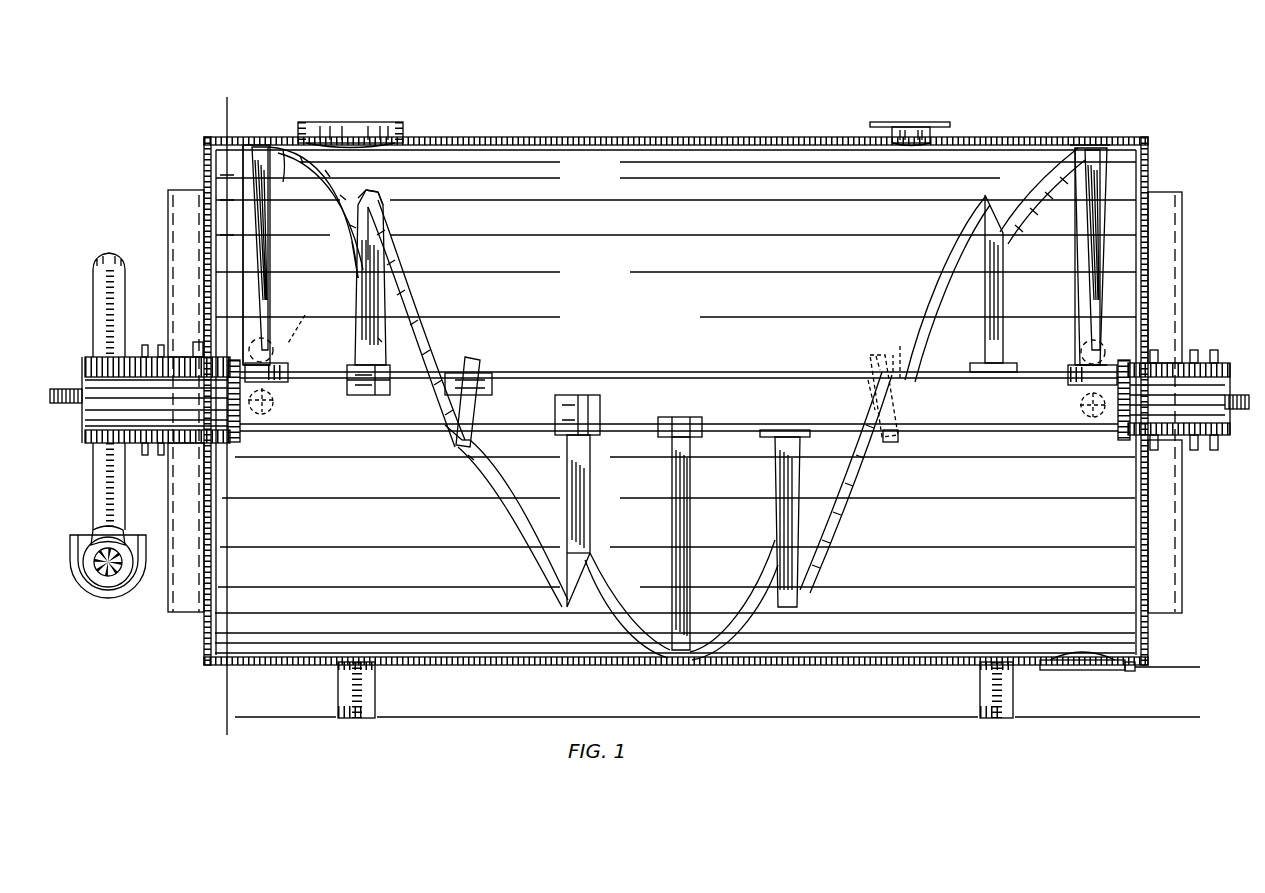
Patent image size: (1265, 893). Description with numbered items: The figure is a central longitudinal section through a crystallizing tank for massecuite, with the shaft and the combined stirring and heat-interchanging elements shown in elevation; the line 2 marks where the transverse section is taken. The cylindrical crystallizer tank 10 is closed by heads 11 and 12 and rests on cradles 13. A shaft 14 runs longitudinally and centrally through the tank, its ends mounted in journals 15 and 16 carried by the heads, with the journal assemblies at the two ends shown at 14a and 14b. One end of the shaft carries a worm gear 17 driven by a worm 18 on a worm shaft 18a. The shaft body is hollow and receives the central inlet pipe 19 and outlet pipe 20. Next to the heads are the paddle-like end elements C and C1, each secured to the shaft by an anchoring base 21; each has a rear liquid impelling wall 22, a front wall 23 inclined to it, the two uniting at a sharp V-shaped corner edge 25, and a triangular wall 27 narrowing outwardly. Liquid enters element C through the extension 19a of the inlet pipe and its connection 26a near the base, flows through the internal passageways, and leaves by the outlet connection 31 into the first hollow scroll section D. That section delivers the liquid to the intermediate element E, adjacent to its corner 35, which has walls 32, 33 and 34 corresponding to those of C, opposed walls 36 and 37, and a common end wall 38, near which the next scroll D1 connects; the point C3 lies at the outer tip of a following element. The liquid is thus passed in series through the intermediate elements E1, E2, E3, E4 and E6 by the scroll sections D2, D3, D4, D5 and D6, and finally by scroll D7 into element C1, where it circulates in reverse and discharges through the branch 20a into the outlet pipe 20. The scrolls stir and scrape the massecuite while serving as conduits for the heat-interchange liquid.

The section line 2— 2 is at (227, 100).
The crystallizer tank 10 is at (745, 142).
The head 11 is at (205, 172).
The head 12 is at (1148, 175).
The cradles 13 is at (345, 692).
The shaft 14 is at (630, 373).
The left bearing flange 14a is at (88, 360).
The right bearing flange 14b is at (1220, 365).
The journal 15 is at (190, 443).
The journal 16 is at (1168, 442).
The worm gear 17 is at (93, 500).
The worm 18 is at (116, 580).
The worm shaft 18a is at (115, 548).
The inlet pipe 19 is at (56, 395).
The extension of inlet pipe 19a is at (292, 380).
The outlet pipe 20 is at (1242, 410).
The branch of outlet pipe 20a is at (1085, 410).
The anchoring base 21 is at (272, 362).
The rear liquid impelling wall 22 is at (270, 300).
The front wall 23 is at (246, 290).
The V-shaped corner edge 25 is at (1075, 144).
The connection 26a is at (288, 352).
The triangular wall 27 is at (250, 337).
The outlet connection 31 is at (279, 162).
The wall 32 is at (382, 340).
The wall 33 is at (352, 242).
The wall 34 is at (362, 198).
The corner point 35 is at (370, 260).
The wall 36 is at (360, 387).
The wall 37 is at (375, 190).
The end wall 38 is at (384, 205).
The end heat-interchanging element C is at (263, 145).
The end heat-interchanging element C' C1 is at (1100, 148).
The arm tip C3 is at (577, 590).
The scroll section D is at (322, 200).
The scroll section D' D1 is at (420, 320).
The scroll section D² D2 is at (505, 490).
The scroll section D³ D3 is at (613, 598).
The scroll section D⁴ D4 is at (750, 597).
The scroll section D⁵ D5 is at (830, 535).
The scroll section D⁶ D6 is at (932, 322).
The scroll section D⁷ D7 is at (1038, 197).
The intermediate heat-interchanging element E is at (380, 200).
The intermediate heat-interchanging element E' E1 is at (478, 365).
The intermediate heat-interchanging element E² E2 is at (590, 495).
The intermediate heat-interchanging element E³ E3 is at (690, 490).
The intermediate heat-interchanging element E⁴ E4 is at (790, 500).
The intermediate heat-interchanging element E⁶ E6 is at (988, 322).